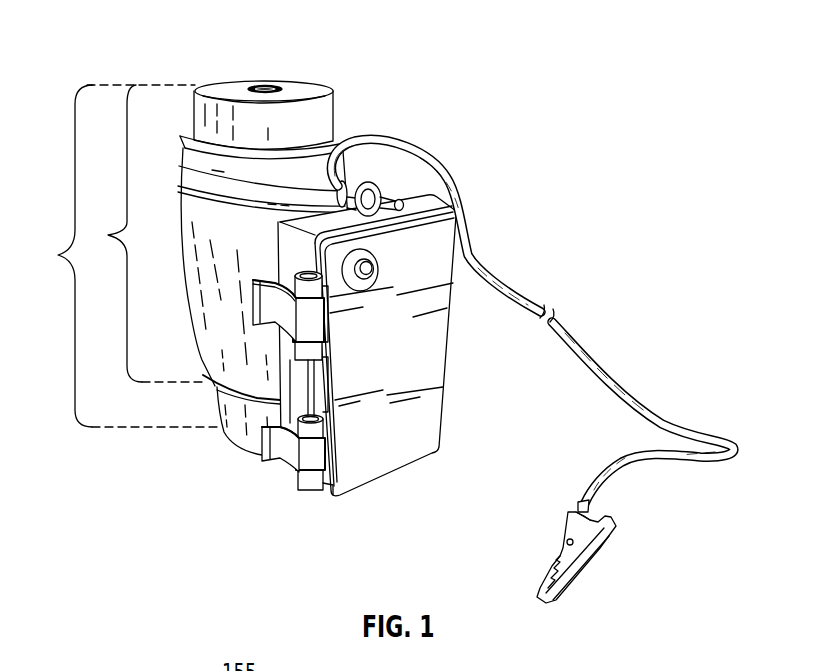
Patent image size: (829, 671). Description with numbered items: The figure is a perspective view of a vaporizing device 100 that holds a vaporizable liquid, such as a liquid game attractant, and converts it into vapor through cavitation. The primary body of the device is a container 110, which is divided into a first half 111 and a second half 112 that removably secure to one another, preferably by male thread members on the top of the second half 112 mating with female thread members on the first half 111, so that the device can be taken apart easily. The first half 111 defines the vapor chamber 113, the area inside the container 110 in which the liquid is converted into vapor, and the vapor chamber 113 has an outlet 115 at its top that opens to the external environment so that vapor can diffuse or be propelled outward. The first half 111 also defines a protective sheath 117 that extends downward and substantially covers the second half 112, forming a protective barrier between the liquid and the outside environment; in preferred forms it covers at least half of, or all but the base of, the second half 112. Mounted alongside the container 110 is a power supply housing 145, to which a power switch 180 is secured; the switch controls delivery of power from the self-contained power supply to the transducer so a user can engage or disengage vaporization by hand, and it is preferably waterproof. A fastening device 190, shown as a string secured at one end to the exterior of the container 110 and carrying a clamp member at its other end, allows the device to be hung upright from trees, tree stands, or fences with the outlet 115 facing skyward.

The vaporizing device 100 is at (120, 44).
The container 110 is at (185, 253).
The first half 111 is at (211, 218).
The second half 112 is at (227, 418).
The vapor chamber 113 is at (207, 125).
The outlet 115 is at (261, 76).
The protective sheath 117 is at (207, 302).
The power supply housing 145 is at (372, 459).
The power switch 180 is at (378, 262).
The fastening device 190 is at (510, 287).